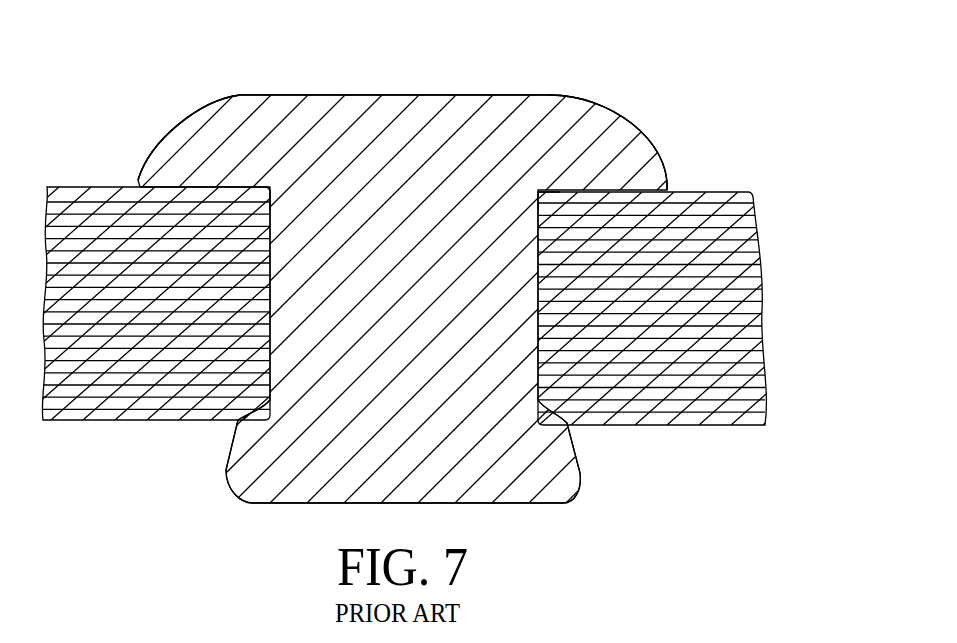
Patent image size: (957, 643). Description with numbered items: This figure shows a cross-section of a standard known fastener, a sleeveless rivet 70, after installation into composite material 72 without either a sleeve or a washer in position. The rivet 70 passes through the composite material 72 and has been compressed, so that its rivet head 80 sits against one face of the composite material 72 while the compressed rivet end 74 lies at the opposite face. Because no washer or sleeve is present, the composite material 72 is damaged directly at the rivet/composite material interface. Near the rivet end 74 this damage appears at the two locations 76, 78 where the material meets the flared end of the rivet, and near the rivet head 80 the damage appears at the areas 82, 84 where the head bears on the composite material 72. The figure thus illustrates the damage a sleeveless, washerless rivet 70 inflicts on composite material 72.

The sleeveless rivet 70 is at (432, 95).
The composite material 72 is at (743, 262).
The rivet end 74 is at (547, 480).
The damage area near rivet end 76 is at (254, 404).
The damage area near rivet end 78 is at (597, 412).
The rivet head 80 is at (578, 107).
The damage area near rivet head 82 is at (260, 197).
The damage area near rivet head 84 is at (547, 197).